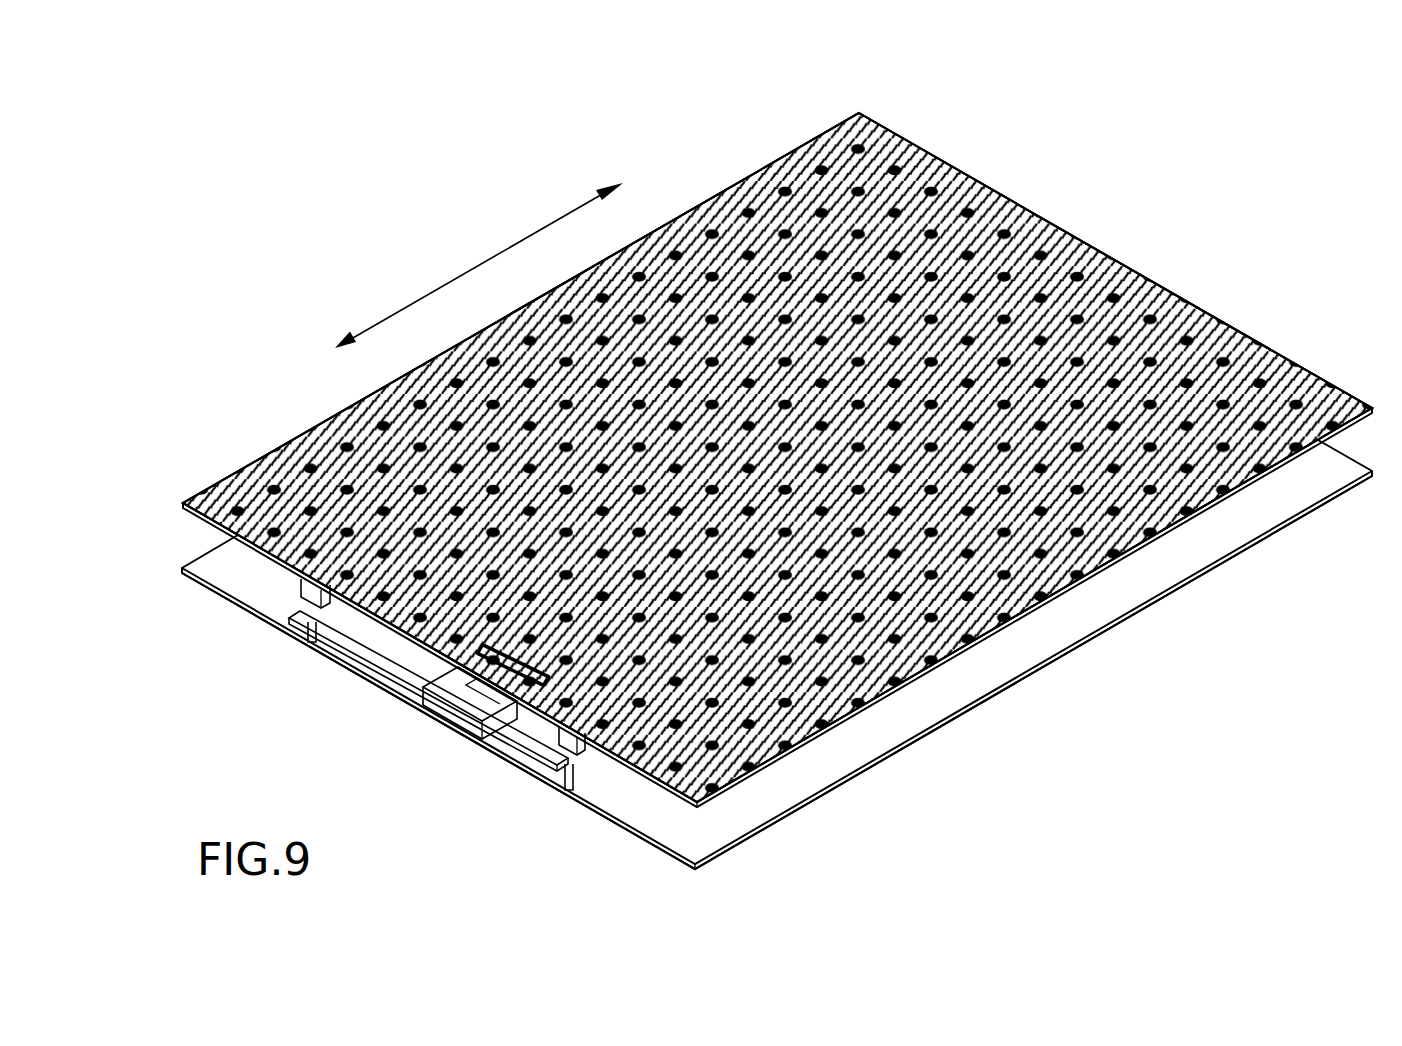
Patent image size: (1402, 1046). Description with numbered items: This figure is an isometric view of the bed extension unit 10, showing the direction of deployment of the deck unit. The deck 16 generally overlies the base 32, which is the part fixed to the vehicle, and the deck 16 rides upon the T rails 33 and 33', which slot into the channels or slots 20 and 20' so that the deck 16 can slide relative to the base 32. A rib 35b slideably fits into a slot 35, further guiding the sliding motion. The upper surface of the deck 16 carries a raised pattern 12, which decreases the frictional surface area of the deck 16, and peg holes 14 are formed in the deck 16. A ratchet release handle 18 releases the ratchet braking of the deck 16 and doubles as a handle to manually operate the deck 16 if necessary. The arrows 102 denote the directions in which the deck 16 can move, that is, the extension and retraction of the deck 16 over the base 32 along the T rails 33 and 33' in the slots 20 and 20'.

The bed extension unit 10 is at (975, 108).
The raised pattern 12 is at (1170, 513).
The peg holes 14 is at (1307, 367).
The deck 16 is at (1214, 308).
The ratchet release handle 18 is at (427, 687).
The channel 20 is at (216, 588).
The slot 20' is at (499, 788).
The base 32 is at (963, 687).
The T rail 33 is at (545, 831).
The T rail 33' is at (194, 636).
The slot 35 is at (437, 703).
The rib 35b is at (497, 660).
The arrows 102 is at (500, 252).